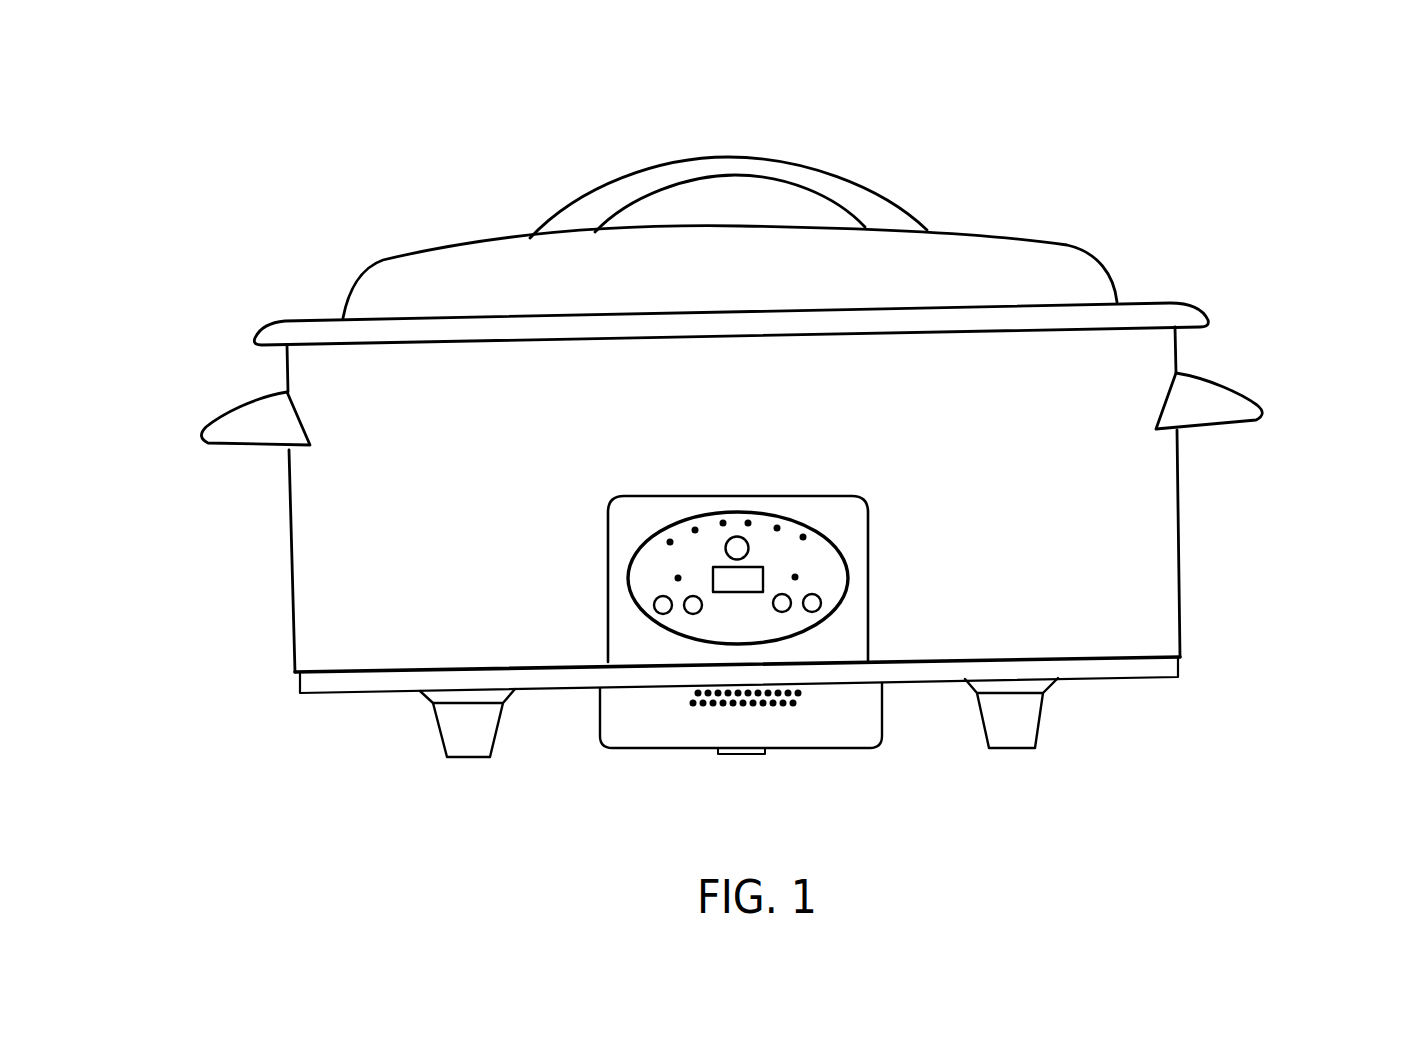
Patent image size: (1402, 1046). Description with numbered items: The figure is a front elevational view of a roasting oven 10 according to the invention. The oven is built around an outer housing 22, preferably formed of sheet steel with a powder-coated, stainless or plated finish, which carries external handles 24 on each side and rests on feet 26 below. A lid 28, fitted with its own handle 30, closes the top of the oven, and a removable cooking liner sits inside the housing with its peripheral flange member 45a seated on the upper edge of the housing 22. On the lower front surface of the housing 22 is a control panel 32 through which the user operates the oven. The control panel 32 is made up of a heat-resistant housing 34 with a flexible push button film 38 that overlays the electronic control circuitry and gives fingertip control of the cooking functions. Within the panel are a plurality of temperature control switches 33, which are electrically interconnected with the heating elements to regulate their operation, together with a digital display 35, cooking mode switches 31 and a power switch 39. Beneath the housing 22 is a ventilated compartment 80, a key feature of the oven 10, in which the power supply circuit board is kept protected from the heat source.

The roasting oven 10 is at (1112, 146).
The outer housing 22 is at (1180, 540).
The external handles 24 is at (242, 402).
The feet 26 is at (447, 733).
The lid 28 is at (1067, 245).
The handle 30 is at (728, 157).
The cooking mode switches 31 is at (785, 597).
The control panel 32 is at (840, 632).
The temperature control switches 33 is at (727, 520).
The heat-resistant housing 34 is at (607, 513).
The digital display 35 is at (767, 567).
The push button film 38 is at (647, 538).
The power switch 39 is at (660, 607).
The peripheral flange member 45a is at (732, 323).
The ventilated compartment 80 is at (633, 725).